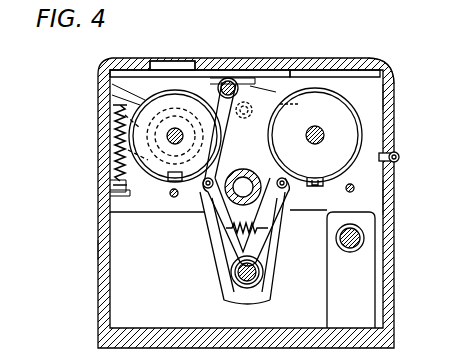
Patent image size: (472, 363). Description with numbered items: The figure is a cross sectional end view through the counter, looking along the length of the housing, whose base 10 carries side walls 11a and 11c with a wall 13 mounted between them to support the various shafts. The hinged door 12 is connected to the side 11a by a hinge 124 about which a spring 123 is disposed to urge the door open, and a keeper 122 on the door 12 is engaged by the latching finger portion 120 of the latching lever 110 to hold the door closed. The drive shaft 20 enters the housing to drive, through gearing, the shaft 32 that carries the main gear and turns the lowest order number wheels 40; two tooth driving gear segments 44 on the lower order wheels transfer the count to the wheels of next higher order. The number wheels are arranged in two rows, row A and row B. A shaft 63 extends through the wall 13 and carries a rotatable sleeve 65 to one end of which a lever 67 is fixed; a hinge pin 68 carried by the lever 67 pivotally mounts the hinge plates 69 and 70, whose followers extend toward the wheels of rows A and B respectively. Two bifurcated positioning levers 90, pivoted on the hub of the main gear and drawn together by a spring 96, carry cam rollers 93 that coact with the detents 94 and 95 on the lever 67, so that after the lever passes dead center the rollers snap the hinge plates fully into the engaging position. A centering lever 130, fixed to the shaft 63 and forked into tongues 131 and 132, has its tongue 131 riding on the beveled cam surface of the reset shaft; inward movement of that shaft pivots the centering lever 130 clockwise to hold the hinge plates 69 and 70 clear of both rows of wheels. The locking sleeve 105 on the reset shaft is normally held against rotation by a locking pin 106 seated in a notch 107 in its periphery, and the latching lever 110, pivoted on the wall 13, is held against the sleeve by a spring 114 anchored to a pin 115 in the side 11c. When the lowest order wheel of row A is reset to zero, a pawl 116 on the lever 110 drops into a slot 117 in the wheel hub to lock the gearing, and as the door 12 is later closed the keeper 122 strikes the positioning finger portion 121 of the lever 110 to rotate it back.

The base 10 is at (396, 333).
The side wall 11a is at (390, 205).
The side wall 11c is at (98, 250).
The hinged door 12 is at (372, 62).
The wall 13 is at (388, 106).
The drive shaft 20 is at (360, 238).
The shaft 32 is at (265, 276).
The first number wheels 40 is at (110, 91).
The two tooth driving gear segments 44 is at (174, 197).
The shaft 63 is at (306, 135).
The sleeve 65 is at (228, 230).
The lever 67 is at (290, 120).
The hinge pin 68 is at (236, 78).
The hinge plate 69 is at (268, 86).
The hinge plate 70 is at (222, 80).
The bifurcated positioning levers 90 is at (220, 268).
The cam rollers 93 is at (205, 200).
The detent 94 is at (240, 172).
The detent 95 is at (291, 152).
The spring 96 is at (228, 244).
The locking sleeve 105 is at (148, 160).
The locking pin 106 is at (140, 128).
The notch 107 is at (168, 136).
The latching lever 110 is at (125, 100).
The spring 114 is at (113, 175).
The pin 115 is at (110, 193).
The pawl 116 is at (170, 92).
The slot 117 is at (172, 65).
The latching finger portion 120 is at (282, 90).
The positioning finger portion 121 is at (300, 104).
The keeper 122 is at (305, 68).
The spring 123 is at (394, 154).
The hinge 124 is at (400, 158).
The centering lever 130 is at (175, 212).
The tongue 131 is at (244, 118).
The tongue 132 is at (124, 192).
The row A is at (140, 95).
The row B is at (333, 84).